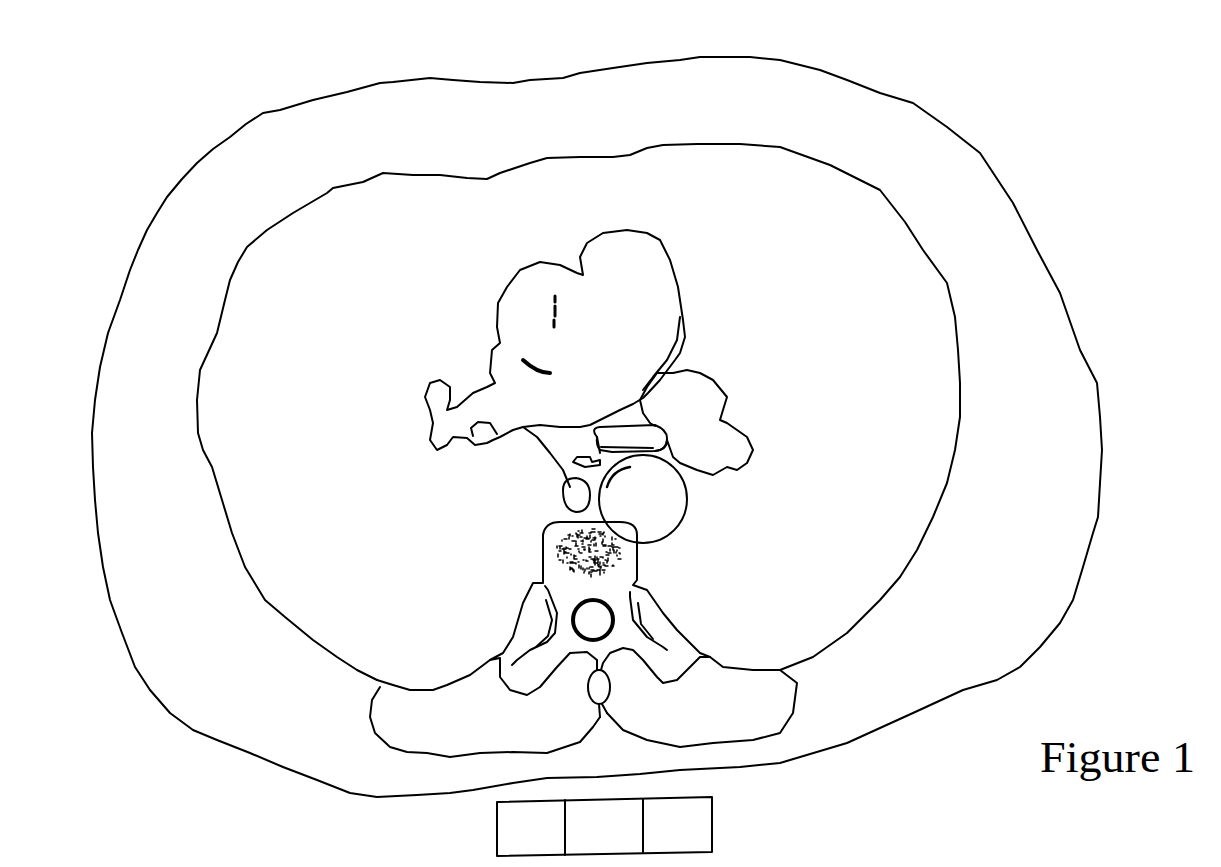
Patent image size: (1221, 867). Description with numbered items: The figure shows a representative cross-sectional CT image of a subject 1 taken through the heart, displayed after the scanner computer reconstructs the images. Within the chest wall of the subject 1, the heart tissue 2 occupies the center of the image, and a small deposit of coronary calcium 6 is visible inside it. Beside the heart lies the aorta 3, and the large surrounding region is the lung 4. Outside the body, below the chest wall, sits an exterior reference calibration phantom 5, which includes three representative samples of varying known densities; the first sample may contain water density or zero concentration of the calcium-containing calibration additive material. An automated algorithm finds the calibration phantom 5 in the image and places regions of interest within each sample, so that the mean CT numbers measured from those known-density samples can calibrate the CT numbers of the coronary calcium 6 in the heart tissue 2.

The patient body (thorax cross-section) 1 is at (942, 139).
The heart tissue 2 is at (662, 303).
The aorta 3 is at (665, 512).
The lung 4 is at (879, 357).
The reference calibration phantom 5 is at (737, 825).
The coronary calcium 6 is at (526, 297).